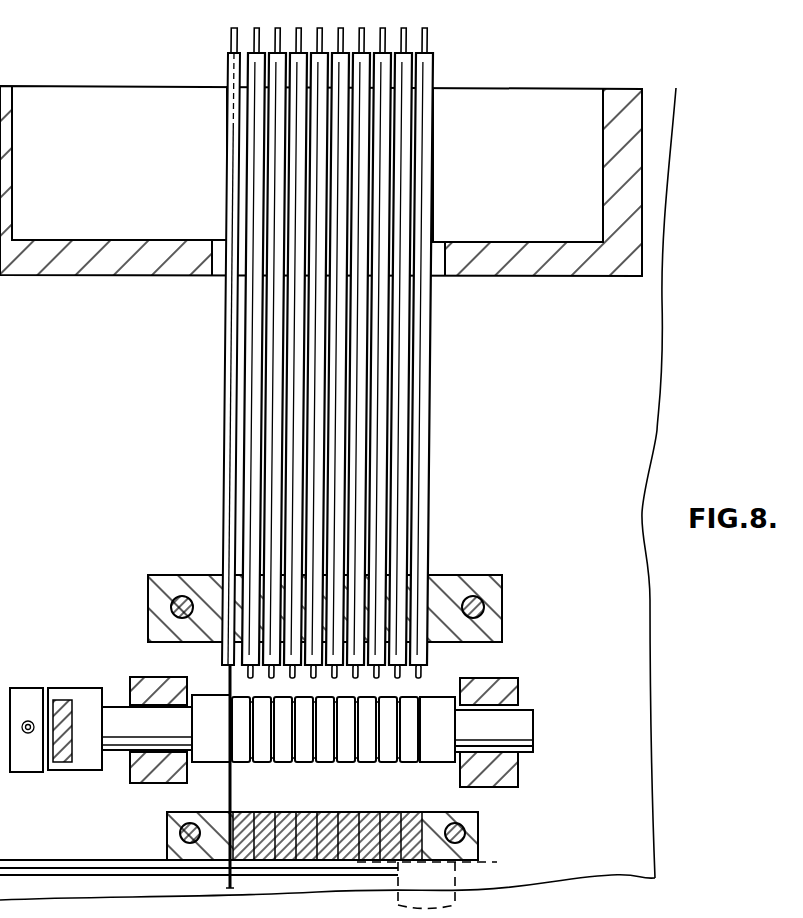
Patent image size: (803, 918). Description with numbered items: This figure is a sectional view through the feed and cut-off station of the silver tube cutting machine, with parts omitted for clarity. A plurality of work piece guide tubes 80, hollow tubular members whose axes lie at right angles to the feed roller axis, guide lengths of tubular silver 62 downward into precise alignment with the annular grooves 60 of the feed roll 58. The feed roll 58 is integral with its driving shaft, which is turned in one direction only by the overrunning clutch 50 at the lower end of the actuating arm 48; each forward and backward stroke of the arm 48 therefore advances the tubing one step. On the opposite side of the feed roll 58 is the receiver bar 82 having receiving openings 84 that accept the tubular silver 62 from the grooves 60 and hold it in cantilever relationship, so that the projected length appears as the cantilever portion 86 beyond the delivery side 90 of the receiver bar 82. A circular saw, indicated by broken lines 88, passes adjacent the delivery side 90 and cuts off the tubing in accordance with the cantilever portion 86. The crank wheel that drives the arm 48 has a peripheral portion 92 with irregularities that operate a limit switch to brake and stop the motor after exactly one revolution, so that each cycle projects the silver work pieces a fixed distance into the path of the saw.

The actuating arm 48 is at (77, 727).
The overrunning clutch 50 is at (77, 695).
The feed roll 58 is at (442, 695).
The annular grooves 60 is at (373, 763).
The tubular silver 62 is at (280, 39).
The work piece guide tubes 80 is at (365, 353).
The receiver bar 82 is at (339, 842).
The receiving openings 84 is at (455, 736).
The cantilever portion 86 is at (228, 885).
The circular saw 88 is at (487, 862).
The delivery side 90 is at (279, 900).
The peripheral portion 92 is at (428, 63).